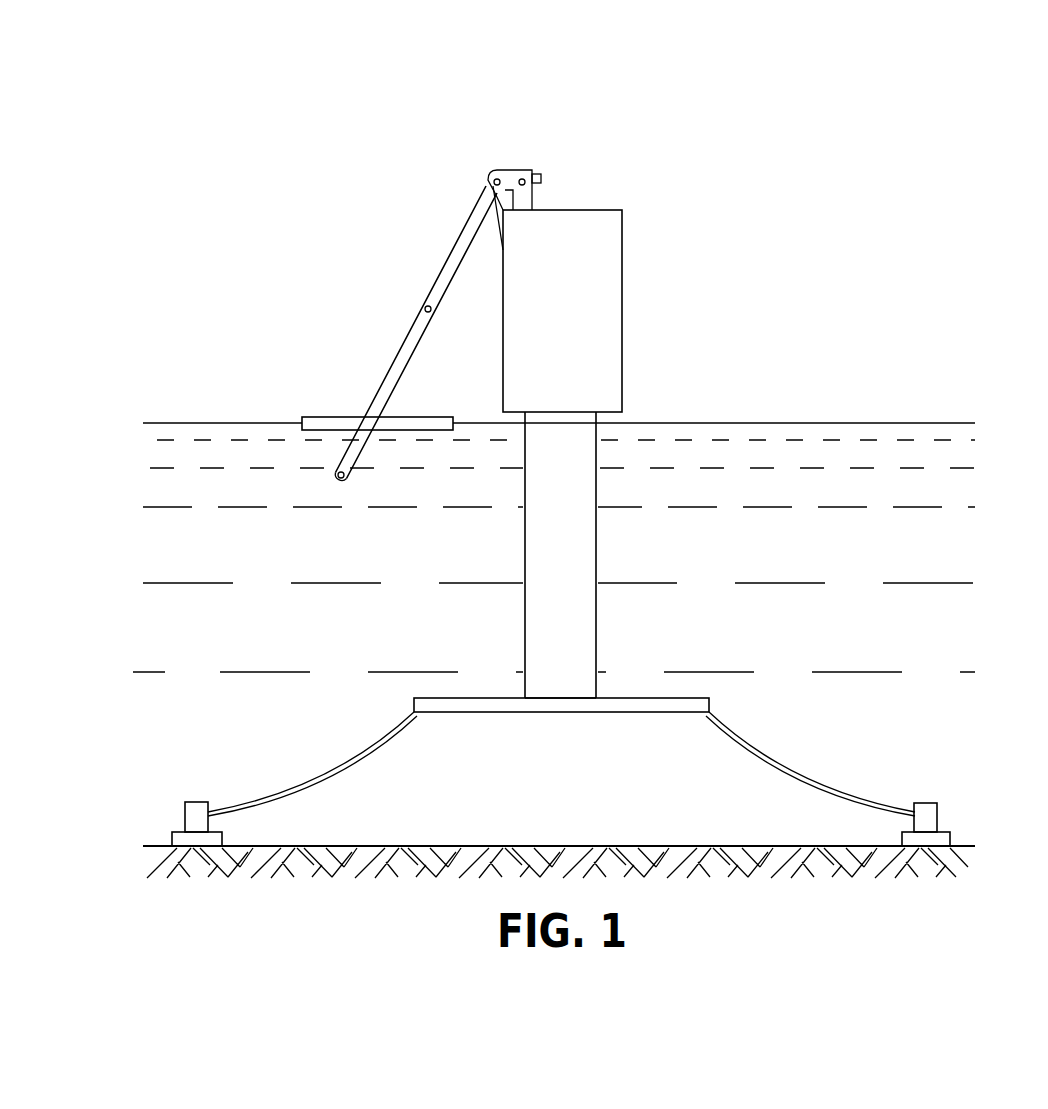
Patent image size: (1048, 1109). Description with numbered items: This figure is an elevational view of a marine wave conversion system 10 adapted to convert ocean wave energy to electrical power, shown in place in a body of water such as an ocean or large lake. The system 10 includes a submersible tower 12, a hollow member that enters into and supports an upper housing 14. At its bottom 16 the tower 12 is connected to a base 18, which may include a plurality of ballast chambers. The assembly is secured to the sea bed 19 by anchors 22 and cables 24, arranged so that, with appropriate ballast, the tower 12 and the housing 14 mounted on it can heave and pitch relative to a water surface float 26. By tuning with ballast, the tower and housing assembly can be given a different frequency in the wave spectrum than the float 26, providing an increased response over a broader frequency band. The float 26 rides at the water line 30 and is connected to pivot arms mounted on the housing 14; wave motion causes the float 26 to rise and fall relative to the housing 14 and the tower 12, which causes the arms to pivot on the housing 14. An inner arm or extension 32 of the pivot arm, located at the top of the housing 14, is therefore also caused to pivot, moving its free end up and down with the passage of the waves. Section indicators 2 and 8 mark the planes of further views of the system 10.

The section line 2- 2 is at (570, 172).
The section line 8- 8 is at (412, 279).
The marine wave conversion system 10 is at (704, 375).
The submersible tower 12 is at (596, 548).
The upper housing 14 is at (622, 237).
The bottom of tower 16 is at (598, 684).
The base 18 is at (676, 697).
The sea bed 19 is at (676, 846).
The anchor 22 is at (185, 815).
The cable 24 is at (200, 805).
The water surface float 26 is at (336, 416).
The water line 30 is at (862, 423).
The inner arm or extension 32 is at (542, 210).